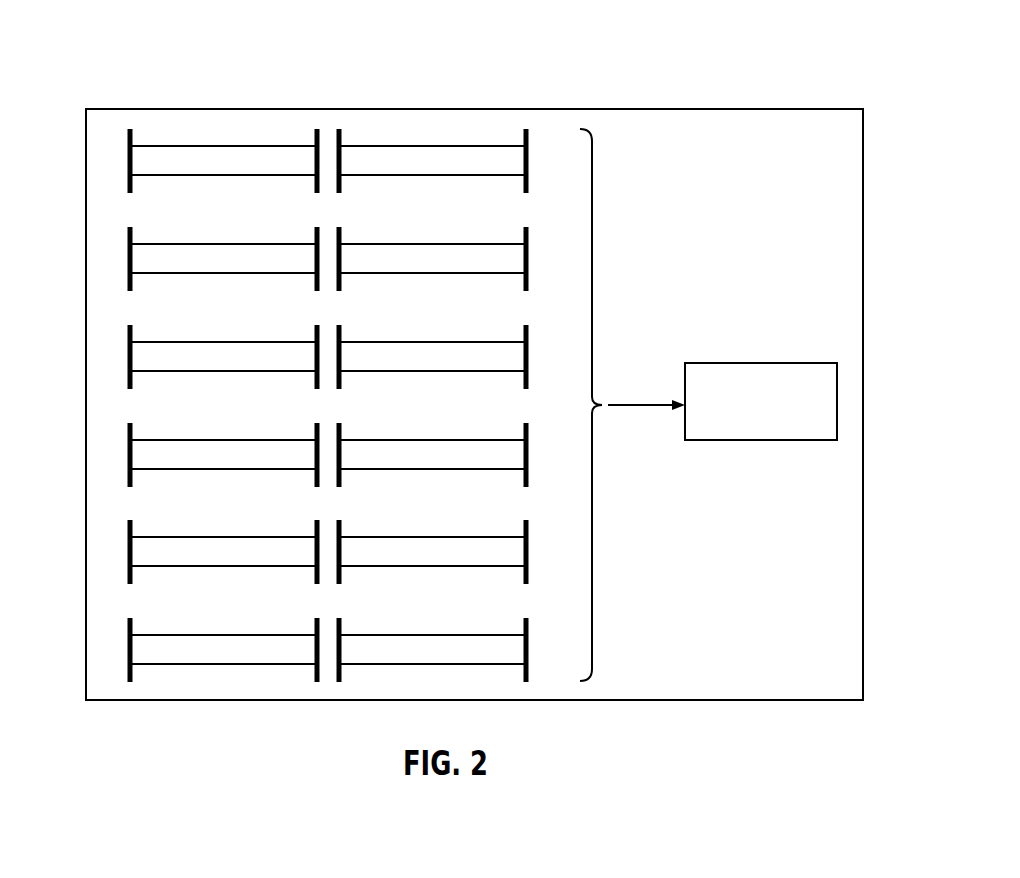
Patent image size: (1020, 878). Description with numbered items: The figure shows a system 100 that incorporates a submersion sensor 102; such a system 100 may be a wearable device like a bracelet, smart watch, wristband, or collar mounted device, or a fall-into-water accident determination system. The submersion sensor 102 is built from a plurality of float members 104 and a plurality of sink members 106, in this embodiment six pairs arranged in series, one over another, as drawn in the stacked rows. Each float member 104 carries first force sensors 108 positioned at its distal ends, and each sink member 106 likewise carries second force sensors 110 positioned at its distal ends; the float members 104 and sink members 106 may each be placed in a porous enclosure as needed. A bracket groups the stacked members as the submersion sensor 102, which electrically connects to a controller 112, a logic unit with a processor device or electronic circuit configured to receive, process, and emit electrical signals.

The system 100 is at (806, 52).
The submersion sensor 102 is at (592, 267).
The float members 104 is at (213, 157).
The sink members 106 is at (443, 157).
The first force sensors 108 is at (130, 141).
The second force sensors 110 is at (340, 137).
The controller 112 is at (760, 363).